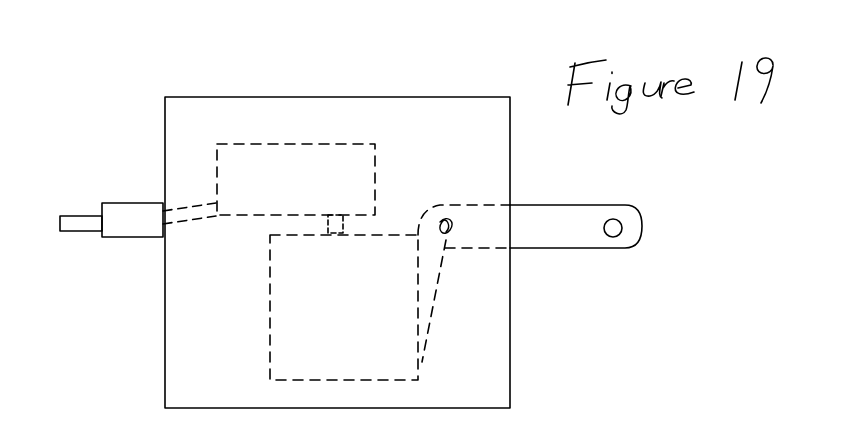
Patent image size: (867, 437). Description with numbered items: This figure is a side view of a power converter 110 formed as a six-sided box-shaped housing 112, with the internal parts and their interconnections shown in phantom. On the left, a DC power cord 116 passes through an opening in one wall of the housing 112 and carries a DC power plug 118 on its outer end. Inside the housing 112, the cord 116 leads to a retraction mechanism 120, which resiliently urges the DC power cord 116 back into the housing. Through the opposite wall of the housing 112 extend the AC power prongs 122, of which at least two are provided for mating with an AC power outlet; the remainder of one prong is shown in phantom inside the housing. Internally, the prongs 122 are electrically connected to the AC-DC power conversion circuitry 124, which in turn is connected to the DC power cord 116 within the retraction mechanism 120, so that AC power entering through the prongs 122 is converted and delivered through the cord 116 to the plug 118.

The power converter 110 is at (291, 214).
The housing 112 is at (337, 210).
The DC power cord 116 is at (157, 264).
The DC power plug 118 is at (111, 193).
The retraction mechanism 120 is at (296, 125).
The AC power prongs 122 is at (576, 266).
The AC-DC power conversion circuitry 124 is at (390, 292).